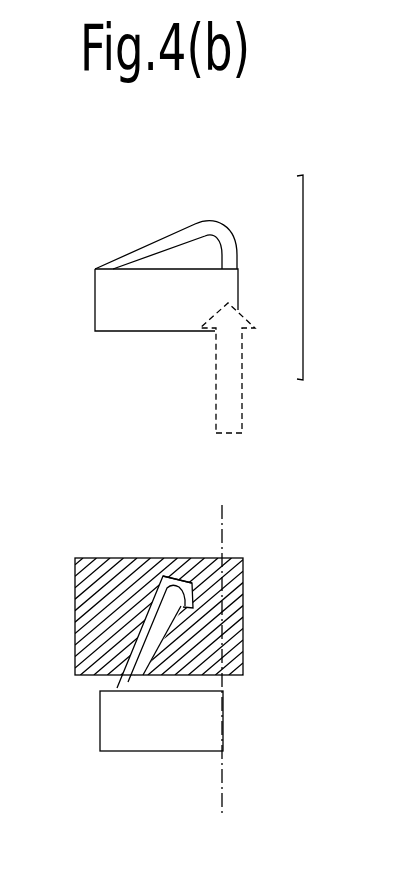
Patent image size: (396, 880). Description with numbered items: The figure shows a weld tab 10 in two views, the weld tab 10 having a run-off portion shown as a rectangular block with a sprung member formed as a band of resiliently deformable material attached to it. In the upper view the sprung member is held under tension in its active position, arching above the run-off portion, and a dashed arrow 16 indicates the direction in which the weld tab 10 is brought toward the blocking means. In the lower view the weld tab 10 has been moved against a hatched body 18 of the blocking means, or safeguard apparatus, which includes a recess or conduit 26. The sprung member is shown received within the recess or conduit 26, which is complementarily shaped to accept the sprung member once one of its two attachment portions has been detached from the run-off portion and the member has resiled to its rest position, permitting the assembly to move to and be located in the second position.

The weld tab 10 is at (303, 285).
The pressing direction 16 is at (232, 395).
The counterpart / workpiece 18 is at (101, 550).
The recess or conduit 26 is at (165, 577).